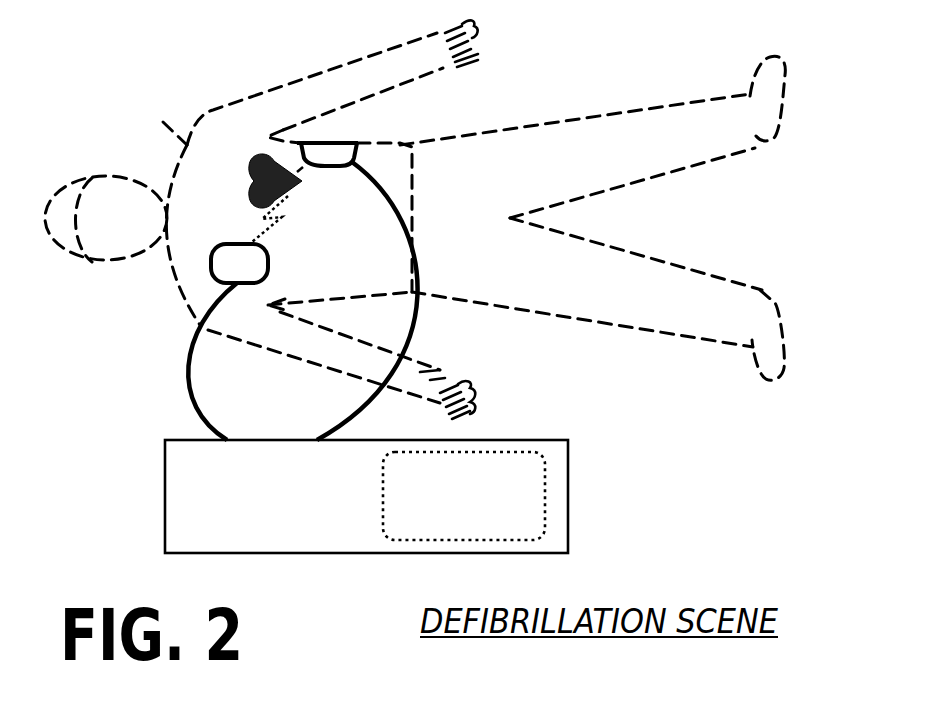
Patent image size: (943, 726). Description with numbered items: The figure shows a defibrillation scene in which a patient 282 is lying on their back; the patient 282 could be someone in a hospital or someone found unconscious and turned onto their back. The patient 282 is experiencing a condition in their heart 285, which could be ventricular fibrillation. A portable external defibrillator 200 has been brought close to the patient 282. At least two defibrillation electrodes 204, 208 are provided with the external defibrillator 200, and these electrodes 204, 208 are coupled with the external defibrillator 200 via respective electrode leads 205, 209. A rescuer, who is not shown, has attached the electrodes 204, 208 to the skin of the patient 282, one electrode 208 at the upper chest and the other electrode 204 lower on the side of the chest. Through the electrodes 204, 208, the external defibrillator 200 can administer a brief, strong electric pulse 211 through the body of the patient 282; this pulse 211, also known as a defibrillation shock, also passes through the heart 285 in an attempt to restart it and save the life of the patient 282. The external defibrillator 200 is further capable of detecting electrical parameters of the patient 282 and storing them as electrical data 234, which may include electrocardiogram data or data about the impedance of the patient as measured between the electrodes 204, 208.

The patient 282 is at (170, 118).
The heart 285 is at (251, 157).
The defibrillation electrode 208 is at (340, 129).
The electric pulse 211 is at (268, 222).
The defibrillation electrode 204 is at (209, 273).
The electrode lead 205 is at (188, 377).
The electrode lead 209 is at (338, 418).
The external defibrillator 200 is at (222, 480).
The electrical data 234 is at (444, 480).